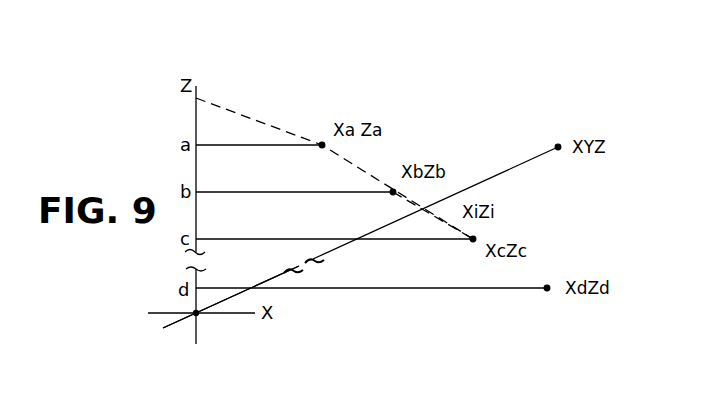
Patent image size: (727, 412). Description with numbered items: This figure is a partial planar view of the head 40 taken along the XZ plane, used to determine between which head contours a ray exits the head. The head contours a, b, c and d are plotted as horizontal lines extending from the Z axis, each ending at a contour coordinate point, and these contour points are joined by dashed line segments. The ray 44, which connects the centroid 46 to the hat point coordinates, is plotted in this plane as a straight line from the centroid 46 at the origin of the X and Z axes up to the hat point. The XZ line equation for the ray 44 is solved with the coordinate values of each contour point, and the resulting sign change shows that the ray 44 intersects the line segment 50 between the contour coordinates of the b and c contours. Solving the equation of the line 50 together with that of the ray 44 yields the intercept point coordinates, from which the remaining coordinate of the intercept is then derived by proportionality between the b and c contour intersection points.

The head 40 is at (293, 120).
The ray 44 is at (335, 248).
The centroid 46 is at (196, 313).
The line segment 50 is at (404, 197).